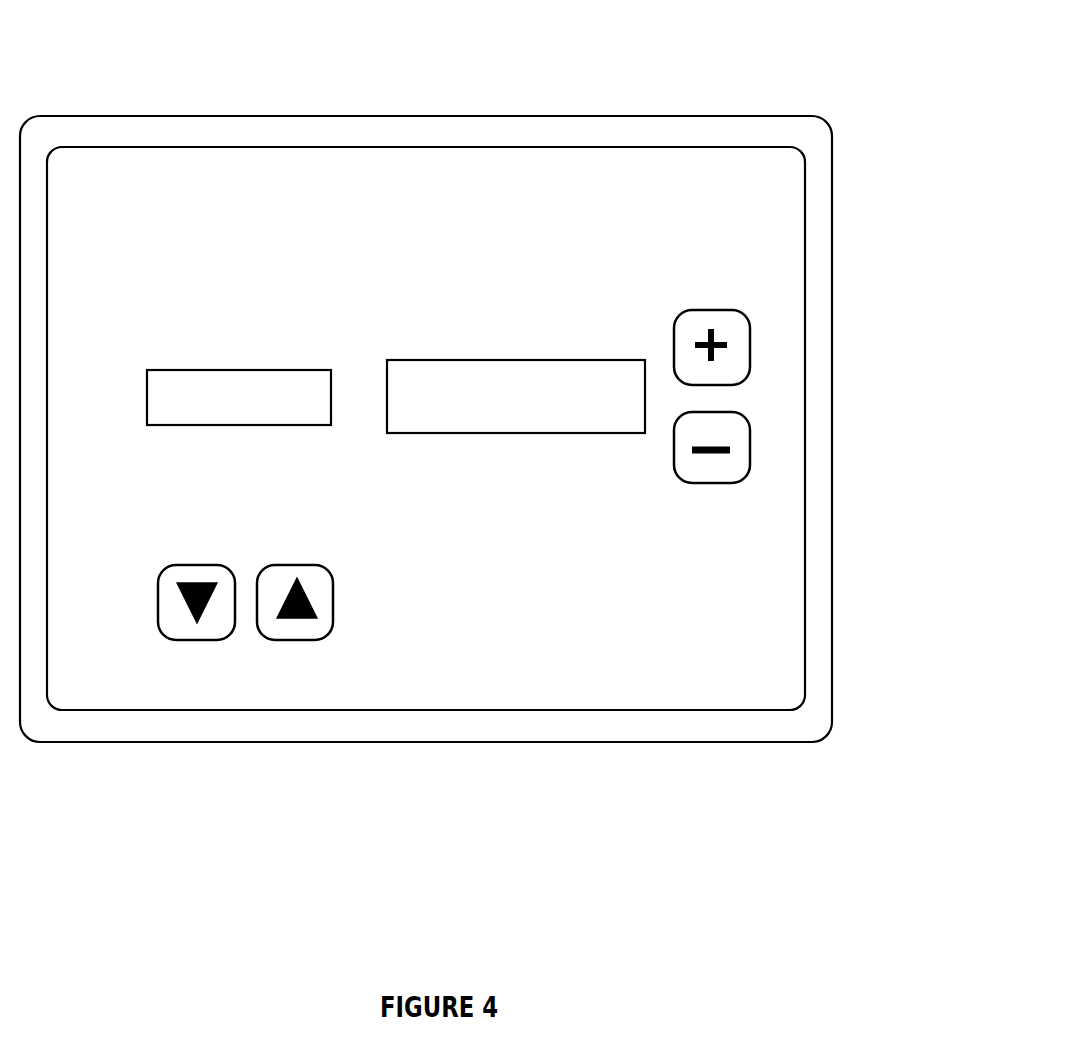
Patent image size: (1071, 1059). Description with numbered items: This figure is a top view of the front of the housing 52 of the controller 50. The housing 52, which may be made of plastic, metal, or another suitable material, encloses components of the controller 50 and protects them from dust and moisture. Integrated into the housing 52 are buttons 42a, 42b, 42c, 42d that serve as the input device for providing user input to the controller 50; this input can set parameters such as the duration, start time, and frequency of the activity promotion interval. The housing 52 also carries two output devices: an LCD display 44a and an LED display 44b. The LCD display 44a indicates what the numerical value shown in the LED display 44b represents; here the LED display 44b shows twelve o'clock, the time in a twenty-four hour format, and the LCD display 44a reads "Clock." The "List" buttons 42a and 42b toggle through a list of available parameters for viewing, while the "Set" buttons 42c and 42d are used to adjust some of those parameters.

The controller 50 is at (109, 63).
The housing 52 is at (655, 117).
The LCD display 44a is at (240, 370).
The LED display 44b is at (515, 360).
The List button 42a is at (193, 565).
The List button 42b is at (295, 565).
The Set button 42c is at (712, 310).
The Set button 42d is at (672, 447).